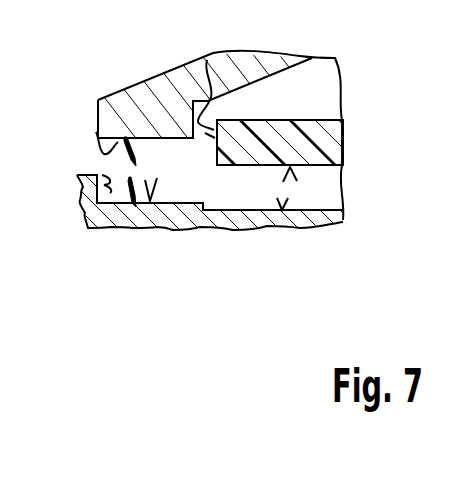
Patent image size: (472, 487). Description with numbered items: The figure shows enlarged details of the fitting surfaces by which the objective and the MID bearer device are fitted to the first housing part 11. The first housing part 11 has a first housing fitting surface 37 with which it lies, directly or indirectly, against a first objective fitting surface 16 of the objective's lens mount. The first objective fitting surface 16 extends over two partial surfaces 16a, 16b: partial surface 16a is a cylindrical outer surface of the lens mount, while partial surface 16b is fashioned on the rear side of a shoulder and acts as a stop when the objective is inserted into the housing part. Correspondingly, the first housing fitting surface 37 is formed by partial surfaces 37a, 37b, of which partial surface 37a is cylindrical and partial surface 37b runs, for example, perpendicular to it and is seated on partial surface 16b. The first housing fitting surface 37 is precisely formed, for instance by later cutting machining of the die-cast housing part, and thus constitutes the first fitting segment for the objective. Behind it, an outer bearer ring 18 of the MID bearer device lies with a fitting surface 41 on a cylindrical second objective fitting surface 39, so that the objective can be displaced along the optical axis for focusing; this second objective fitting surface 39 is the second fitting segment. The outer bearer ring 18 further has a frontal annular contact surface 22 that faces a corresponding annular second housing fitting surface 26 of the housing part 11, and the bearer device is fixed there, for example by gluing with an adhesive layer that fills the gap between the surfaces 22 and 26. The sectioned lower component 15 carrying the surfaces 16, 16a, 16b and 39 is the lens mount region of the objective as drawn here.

The first housing part 11 is at (158, 89).
The lower component / carrier 15 is at (112, 218).
The first objective fitting surface 16 is at (134, 203).
The partial surface 16a is at (150, 201).
The partial surface 16b is at (102, 175).
The outer bearer ring 18 is at (318, 140).
The frontal annular contact surface 22 is at (205, 133).
The second housing fitting surface 26 is at (207, 60).
The first housing fitting surface 37 is at (130, 140).
The partial surface 37a is at (96, 132).
The partial surface 37b is at (97, 118).
The second objective fitting surface 39 is at (285, 203).
The fitting surface 41 is at (297, 181).